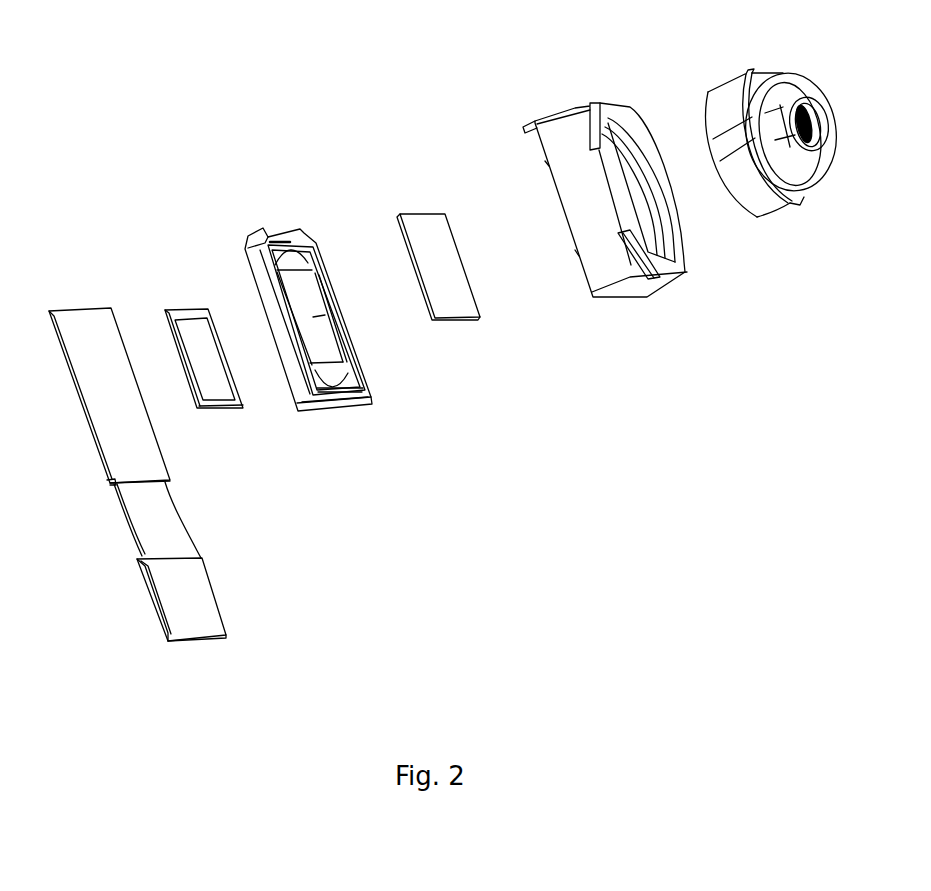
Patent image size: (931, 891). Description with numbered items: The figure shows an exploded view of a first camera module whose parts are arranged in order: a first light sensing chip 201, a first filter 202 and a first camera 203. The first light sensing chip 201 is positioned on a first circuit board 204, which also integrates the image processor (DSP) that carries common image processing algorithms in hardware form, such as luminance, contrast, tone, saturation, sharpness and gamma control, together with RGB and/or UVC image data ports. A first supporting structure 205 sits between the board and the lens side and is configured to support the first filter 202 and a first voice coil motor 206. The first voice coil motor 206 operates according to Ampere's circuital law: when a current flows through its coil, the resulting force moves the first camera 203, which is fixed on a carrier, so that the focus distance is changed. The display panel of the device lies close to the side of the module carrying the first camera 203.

The first light sensing chip 201 is at (203, 316).
The first filter 202 is at (433, 237).
The first camera 203 is at (733, 98).
The first circuit board 204 is at (90, 328).
The first supporting structure 205 is at (254, 258).
The first voice coil motor 206 is at (566, 142).